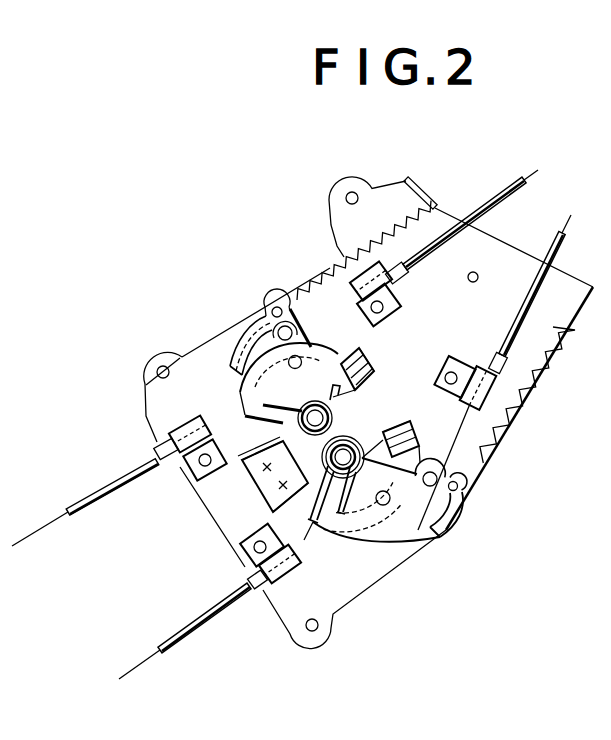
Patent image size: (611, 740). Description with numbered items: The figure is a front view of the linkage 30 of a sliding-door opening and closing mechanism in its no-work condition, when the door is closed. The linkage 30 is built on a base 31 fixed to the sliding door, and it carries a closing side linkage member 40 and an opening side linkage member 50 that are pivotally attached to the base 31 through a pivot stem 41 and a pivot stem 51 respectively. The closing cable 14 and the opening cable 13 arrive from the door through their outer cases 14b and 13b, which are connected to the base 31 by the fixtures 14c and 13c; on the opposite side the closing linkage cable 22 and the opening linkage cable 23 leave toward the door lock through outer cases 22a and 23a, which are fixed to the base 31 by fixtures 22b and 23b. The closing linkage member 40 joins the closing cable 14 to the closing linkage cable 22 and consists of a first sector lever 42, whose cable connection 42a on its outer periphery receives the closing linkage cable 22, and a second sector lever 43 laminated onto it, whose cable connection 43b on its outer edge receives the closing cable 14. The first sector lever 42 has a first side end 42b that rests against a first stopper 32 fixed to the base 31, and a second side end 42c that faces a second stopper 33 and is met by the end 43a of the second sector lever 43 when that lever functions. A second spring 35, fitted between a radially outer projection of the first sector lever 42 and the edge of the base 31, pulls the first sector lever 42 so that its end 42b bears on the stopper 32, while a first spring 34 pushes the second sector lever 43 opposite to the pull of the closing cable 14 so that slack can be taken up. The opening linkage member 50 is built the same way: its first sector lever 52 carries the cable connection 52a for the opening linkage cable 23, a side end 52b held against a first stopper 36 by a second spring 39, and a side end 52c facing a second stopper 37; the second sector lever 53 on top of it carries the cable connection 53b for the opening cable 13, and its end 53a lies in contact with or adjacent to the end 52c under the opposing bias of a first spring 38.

The opening cable 13 is at (136, 655).
The outer case 13b is at (186, 645).
The fixture 13c is at (250, 560).
The closing cable 14 is at (58, 513).
The outer case 14b is at (100, 508).
The fixture 14c is at (185, 476).
The closing linkage cable 22 is at (533, 178).
The outer case 22a is at (483, 207).
The fixture 22b is at (401, 298).
The opening linkage cable 23 is at (566, 232).
The outer case 23a is at (528, 292).
The fixture 23b is at (460, 362).
The linkage 30 is at (162, 297).
The base 31 is at (470, 322).
The first stopper 32 is at (374, 366).
The second stopper 33 is at (262, 452).
The first spring 34 is at (288, 366).
The second spring 35 is at (340, 266).
The first stopper 36 is at (405, 420).
The second stopper 37 is at (302, 510).
The first spring 38 is at (296, 492).
The second spring 39 is at (522, 396).
The closing side linkage member 40 is at (245, 328).
The pivot stem 41 is at (333, 420).
The first sector lever 42 is at (374, 348).
The cable connection 42a is at (250, 366).
The first side end 42b is at (370, 350).
The second side end 42c is at (250, 421).
The second sector lever 43 is at (370, 410).
The end 43a is at (262, 404).
The cable connection 43b is at (262, 345).
The opening side linkage member 50 is at (354, 540).
The pivot stem 51 is at (336, 452).
The first sector lever 52 is at (422, 550).
The cable connection 52a is at (432, 528).
The side end 52b is at (420, 446).
The side end 52c is at (302, 538).
The second sector lever 53 is at (392, 421).
The end 53a is at (330, 522).
The cable connection 53b is at (365, 523).